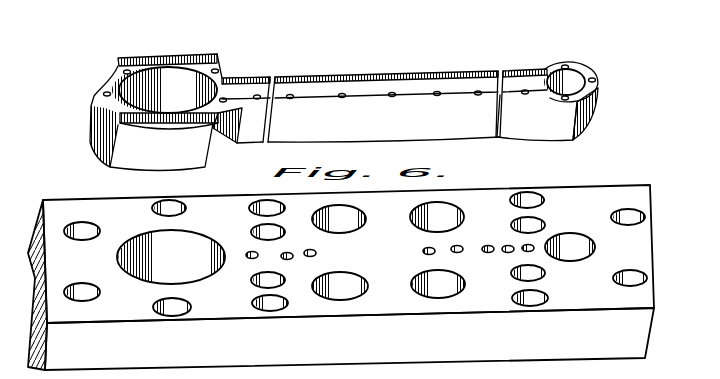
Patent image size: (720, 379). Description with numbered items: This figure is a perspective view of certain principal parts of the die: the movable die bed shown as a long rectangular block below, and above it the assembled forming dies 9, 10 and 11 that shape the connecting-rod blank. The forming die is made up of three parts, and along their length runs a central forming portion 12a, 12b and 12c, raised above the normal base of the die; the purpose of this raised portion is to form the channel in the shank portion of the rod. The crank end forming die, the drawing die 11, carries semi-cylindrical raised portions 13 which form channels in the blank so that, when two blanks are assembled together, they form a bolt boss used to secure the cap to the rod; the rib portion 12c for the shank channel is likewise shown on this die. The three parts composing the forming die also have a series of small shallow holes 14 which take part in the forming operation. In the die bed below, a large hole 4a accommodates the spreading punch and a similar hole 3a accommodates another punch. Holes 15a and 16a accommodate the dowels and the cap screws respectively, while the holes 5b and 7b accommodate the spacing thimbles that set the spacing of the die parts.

The forming die 9 is at (547, 101).
The forming die 10 is at (368, 127).
The drawing die 11 is at (166, 112).
The central forming portion 12a is at (243, 82).
The central forming portion 12b is at (383, 73).
The rib portion 12c is at (525, 72).
The semi-cylindrical raised portions 13 is at (164, 56).
The small shallow holes 14 is at (107, 93).
The hole 3a is at (571, 237).
The hole 4a is at (171, 257).
The holes 5b is at (85, 240).
The holes 7b is at (412, 278).
The holes 15a is at (288, 260).
The holes 16a is at (258, 254).